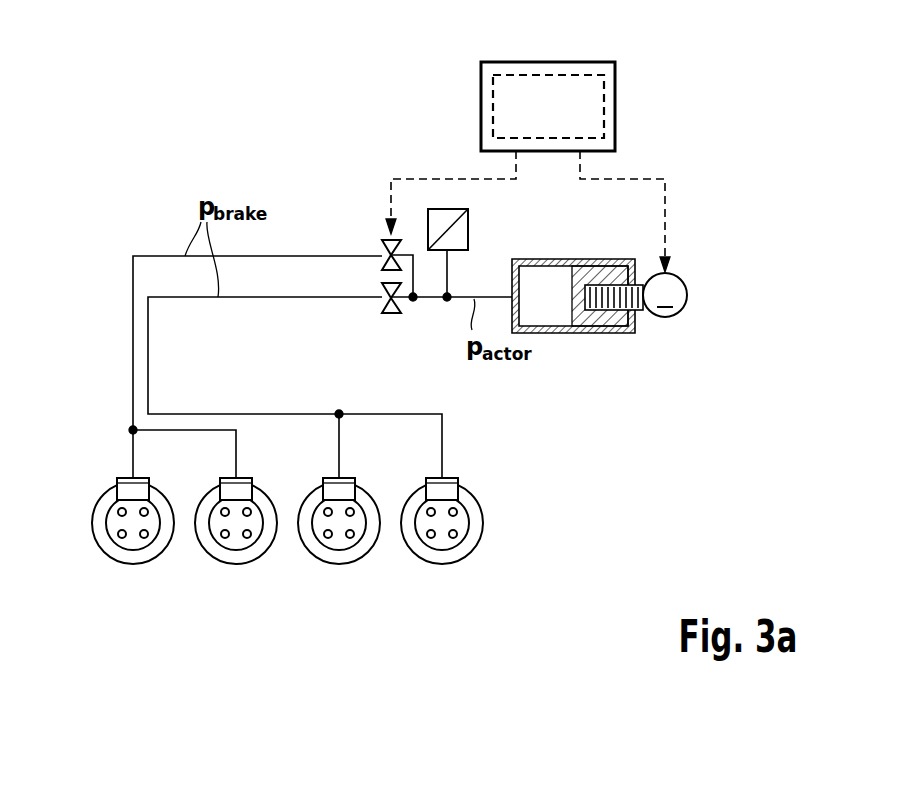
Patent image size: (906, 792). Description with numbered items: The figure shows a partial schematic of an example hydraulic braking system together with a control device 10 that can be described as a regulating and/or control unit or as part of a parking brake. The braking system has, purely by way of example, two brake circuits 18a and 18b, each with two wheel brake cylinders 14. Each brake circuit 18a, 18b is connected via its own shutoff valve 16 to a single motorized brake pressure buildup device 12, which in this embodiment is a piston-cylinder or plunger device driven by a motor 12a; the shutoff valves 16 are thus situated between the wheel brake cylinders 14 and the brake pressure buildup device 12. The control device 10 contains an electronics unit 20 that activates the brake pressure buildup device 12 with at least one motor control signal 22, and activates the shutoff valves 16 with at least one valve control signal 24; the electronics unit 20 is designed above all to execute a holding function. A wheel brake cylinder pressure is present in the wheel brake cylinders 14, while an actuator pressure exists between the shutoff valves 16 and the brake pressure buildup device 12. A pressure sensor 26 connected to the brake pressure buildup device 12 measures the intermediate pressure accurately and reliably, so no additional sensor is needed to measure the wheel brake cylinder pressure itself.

The control device 10 is at (615, 105).
The electronics unit 20 is at (527, 75).
The valve control signal 24 is at (393, 176).
The motor control signal 22 is at (665, 213).
The shutoff valve 16 is at (387, 249).
The pressure sensor 26 is at (468, 225).
The brake pressure buildup device 12 is at (648, 345).
The motor 12a is at (688, 295).
The first brake circuit 18a is at (133, 357).
The second brake circuit 18b is at (148, 357).
The wheel brake cylinder 14 is at (136, 550).